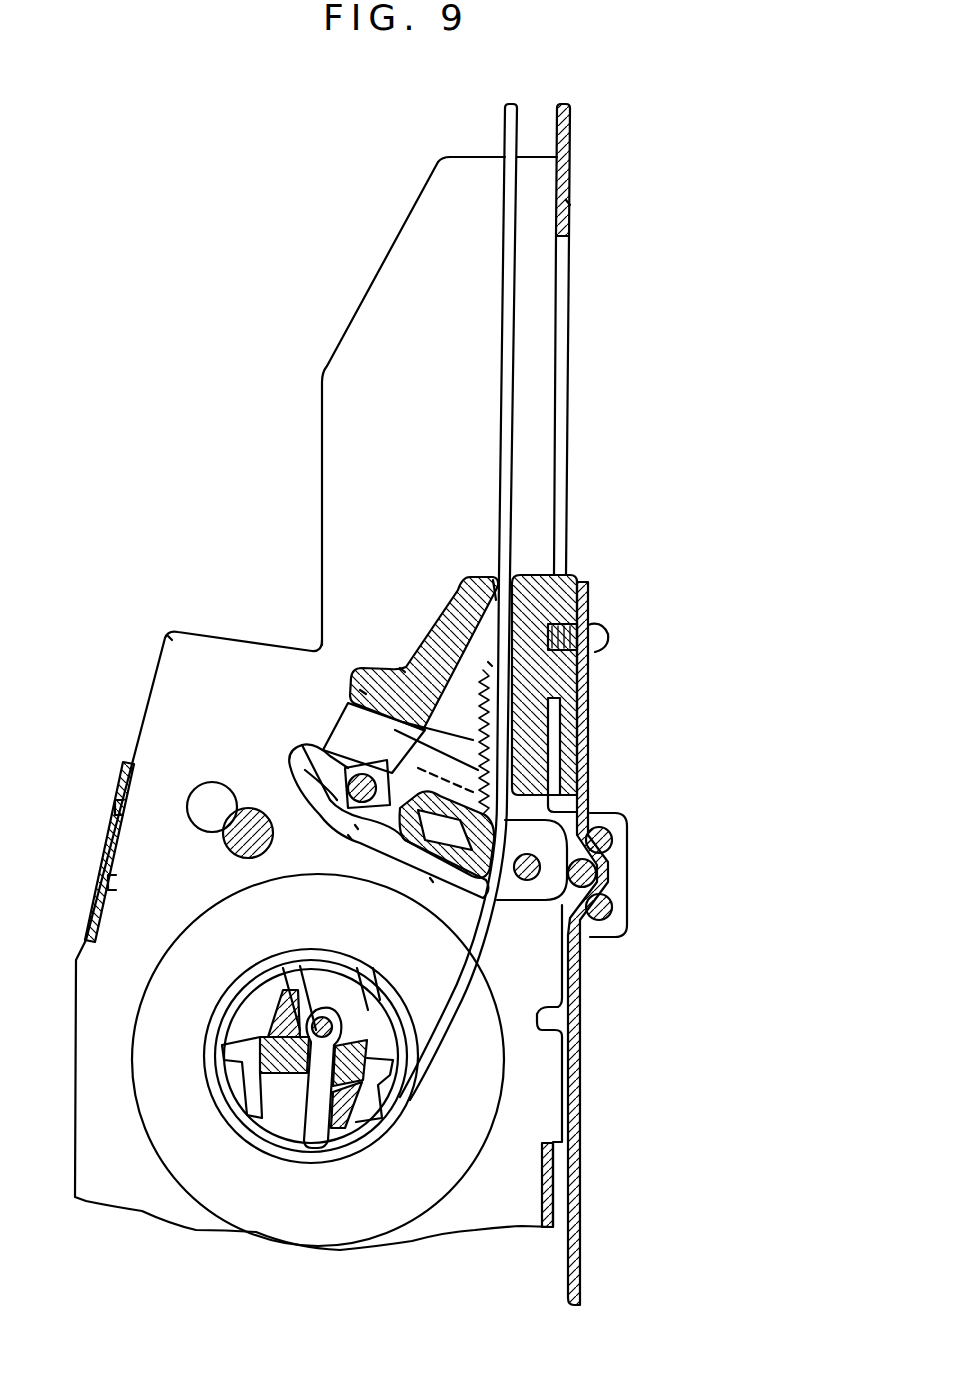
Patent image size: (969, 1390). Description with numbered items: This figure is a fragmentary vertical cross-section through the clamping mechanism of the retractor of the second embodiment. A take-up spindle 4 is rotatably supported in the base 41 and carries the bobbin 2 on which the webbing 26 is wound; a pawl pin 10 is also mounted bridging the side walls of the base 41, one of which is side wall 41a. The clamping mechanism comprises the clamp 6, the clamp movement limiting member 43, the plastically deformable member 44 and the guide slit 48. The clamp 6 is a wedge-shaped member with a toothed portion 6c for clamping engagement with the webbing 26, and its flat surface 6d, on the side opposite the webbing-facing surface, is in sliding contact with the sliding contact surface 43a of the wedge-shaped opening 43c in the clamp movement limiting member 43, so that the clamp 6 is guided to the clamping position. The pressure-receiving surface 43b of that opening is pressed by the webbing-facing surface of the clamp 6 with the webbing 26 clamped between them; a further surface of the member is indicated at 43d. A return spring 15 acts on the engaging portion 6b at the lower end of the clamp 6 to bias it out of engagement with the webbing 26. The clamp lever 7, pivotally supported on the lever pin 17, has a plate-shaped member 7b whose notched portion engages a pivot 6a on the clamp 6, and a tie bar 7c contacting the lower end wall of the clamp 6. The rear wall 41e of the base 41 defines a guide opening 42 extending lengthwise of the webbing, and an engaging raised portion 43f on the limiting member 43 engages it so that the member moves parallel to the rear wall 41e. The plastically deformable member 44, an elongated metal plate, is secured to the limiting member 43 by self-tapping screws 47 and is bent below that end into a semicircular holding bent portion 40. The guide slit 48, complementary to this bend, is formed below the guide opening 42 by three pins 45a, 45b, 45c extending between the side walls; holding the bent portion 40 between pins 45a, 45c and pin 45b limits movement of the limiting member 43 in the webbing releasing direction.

The bobbin 2 is at (195, 1183).
The take-up spindle 4 is at (370, 1120).
The clamp 6 is at (385, 824).
The pivots 6a is at (352, 838).
The engaging portion 6b is at (300, 762).
The toothed portion 6c is at (522, 720).
The flat surface 6d is at (400, 670).
The clamp lever 7 is at (428, 886).
The plate-shaped member 7b is at (355, 825).
The tie bar 7c is at (430, 880).
The pawl pin 10 is at (240, 838).
The return spring 15 is at (350, 735).
The lever pin 17 is at (527, 882).
The webbing 26 is at (508, 290).
The holding bent portion 40 is at (602, 877).
The base 41 is at (240, 625).
The side wall 41a is at (168, 677).
The rear wall 41e is at (570, 205).
The guide opening 42 is at (560, 388).
The clamp movement limiting member 43 is at (449, 648).
The sliding contact surface 43a is at (490, 665).
The pressure-receiving surface 43b is at (468, 622).
The wedge-shaped opening 43c is at (494, 600).
The lock member foot 43d is at (348, 740).
The engaging raised portion 43f is at (565, 592).
The plastically deformable member 44 is at (578, 1105).
The pin 45a is at (607, 828).
The pin 45b is at (572, 885).
The pin 45c is at (615, 922).
The self-tapping screws 47 is at (602, 640).
The guide slit 48 is at (613, 857).